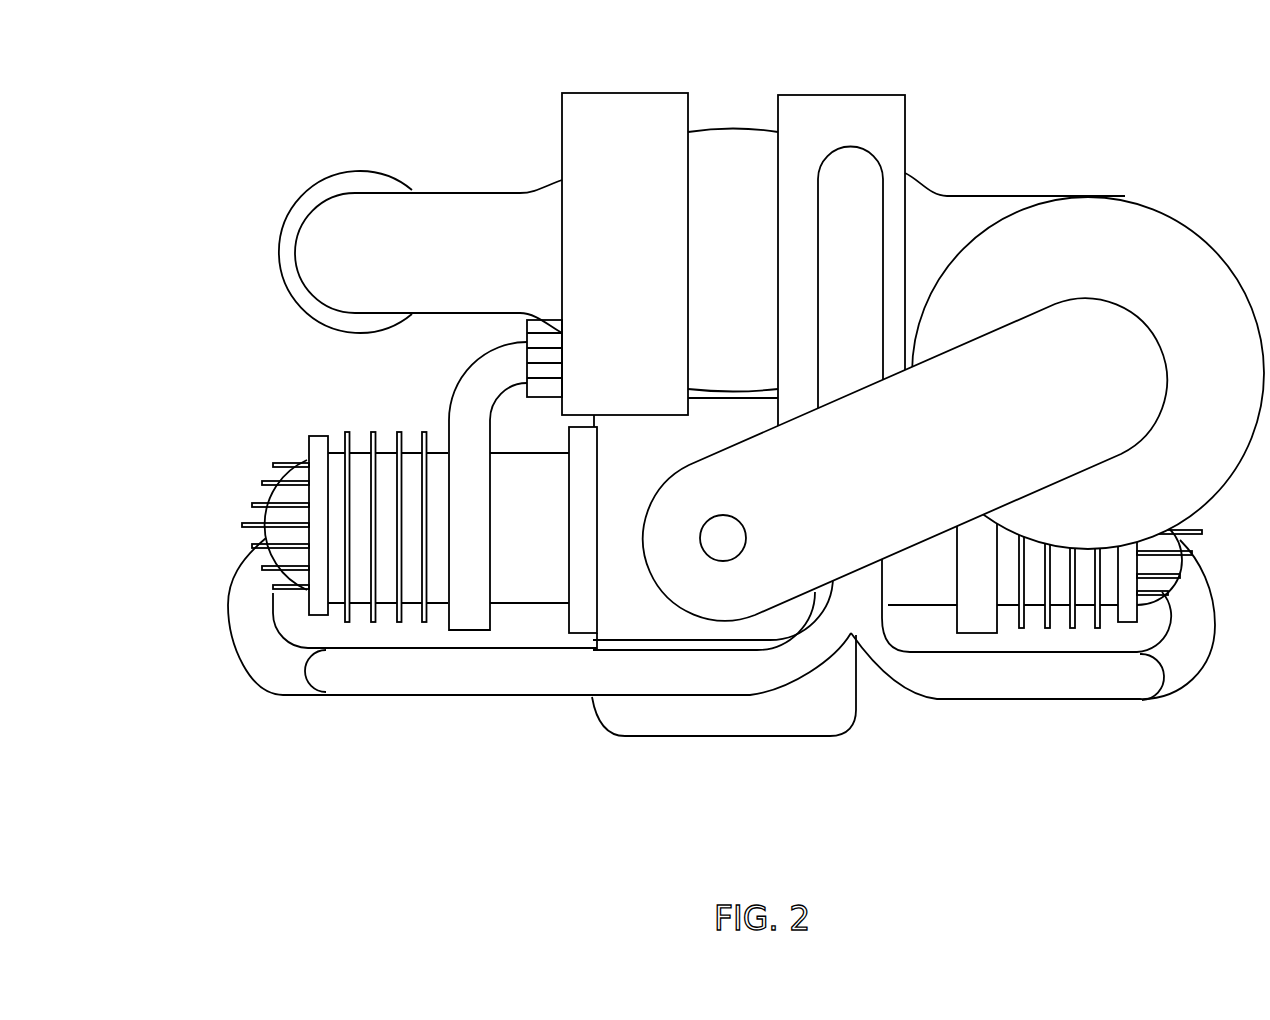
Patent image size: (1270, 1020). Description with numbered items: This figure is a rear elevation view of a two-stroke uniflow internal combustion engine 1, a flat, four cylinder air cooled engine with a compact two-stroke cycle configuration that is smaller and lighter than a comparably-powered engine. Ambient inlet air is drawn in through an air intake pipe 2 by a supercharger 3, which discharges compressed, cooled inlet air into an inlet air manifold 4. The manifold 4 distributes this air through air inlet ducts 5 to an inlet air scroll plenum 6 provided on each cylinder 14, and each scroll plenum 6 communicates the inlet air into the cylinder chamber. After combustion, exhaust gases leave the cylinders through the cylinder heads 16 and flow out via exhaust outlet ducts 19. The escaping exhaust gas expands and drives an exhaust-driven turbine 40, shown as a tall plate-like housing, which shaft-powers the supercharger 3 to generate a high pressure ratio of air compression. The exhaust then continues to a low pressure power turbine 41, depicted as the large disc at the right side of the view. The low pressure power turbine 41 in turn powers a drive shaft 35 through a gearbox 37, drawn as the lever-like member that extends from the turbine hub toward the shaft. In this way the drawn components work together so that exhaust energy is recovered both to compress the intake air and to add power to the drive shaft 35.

The engine 1 is at (689, 434).
The air intake pipe 2 is at (299, 273).
The supercharger 3 is at (560, 137).
The inlet air manifold 4 is at (527, 327).
The air inlet duct 5 is at (465, 372).
The inlet air scroll plenum 6 is at (406, 579).
The cylinder 14 is at (363, 553).
The cylinder head 16 is at (275, 496).
The exhaust outlet duct 19 is at (250, 590).
The drive shaft 35 is at (725, 538).
The gearbox 37 is at (874, 469).
The exhaust-driven turbine 40 is at (905, 132).
The low pressure power turbine 41 is at (1029, 399).